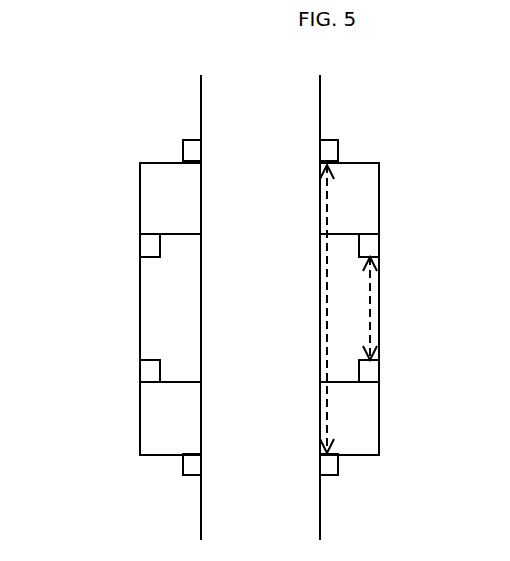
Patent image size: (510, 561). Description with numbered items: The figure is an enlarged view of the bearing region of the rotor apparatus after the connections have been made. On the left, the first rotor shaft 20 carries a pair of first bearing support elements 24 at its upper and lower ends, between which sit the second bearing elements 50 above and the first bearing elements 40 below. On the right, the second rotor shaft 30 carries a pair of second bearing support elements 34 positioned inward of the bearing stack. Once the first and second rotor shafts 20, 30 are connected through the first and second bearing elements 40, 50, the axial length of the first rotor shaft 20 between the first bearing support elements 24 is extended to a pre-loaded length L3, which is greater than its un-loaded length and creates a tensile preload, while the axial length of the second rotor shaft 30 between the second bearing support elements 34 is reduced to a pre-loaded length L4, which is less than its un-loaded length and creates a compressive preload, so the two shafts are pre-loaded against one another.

The first rotor shaft 20 is at (323, 100).
The first bearing support elements 24 is at (183, 158).
The second rotor shaft 30 is at (380, 195).
The second bearing support elements 34 is at (140, 243).
The first bearing elements 40 is at (170, 418).
The second bearing elements 50 is at (170, 198).
The pre-loaded axial length of the first rotor shaft L3 is at (327, 288).
The pre-loaded axial length of the second rotor shaft L4 is at (370, 332).